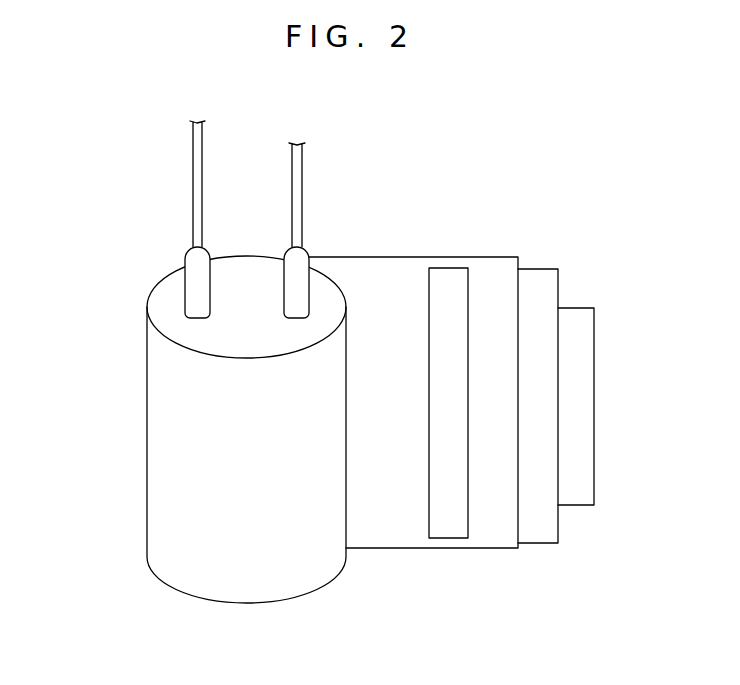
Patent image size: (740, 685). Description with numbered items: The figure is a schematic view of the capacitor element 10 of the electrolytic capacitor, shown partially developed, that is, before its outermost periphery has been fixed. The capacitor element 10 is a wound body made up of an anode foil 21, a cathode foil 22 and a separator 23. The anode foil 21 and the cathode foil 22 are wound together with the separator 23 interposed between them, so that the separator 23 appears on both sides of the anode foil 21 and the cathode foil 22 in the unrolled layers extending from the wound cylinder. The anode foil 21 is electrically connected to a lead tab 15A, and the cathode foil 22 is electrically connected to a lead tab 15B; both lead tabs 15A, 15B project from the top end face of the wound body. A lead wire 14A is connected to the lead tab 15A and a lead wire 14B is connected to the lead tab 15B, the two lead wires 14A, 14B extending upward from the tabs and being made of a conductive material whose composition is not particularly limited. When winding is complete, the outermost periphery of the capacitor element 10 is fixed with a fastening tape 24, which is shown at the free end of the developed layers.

The capacitor element 10 is at (428, 129).
The lead wire 14A is at (198, 160).
The lead wire 14B is at (298, 154).
The lead tab 15A is at (193, 265).
The lead tab 15B is at (298, 266).
The anode foil 21 is at (458, 518).
The cathode foil 22 is at (540, 533).
The separator 23 is at (398, 520).
The fastening tape 24 is at (577, 495).